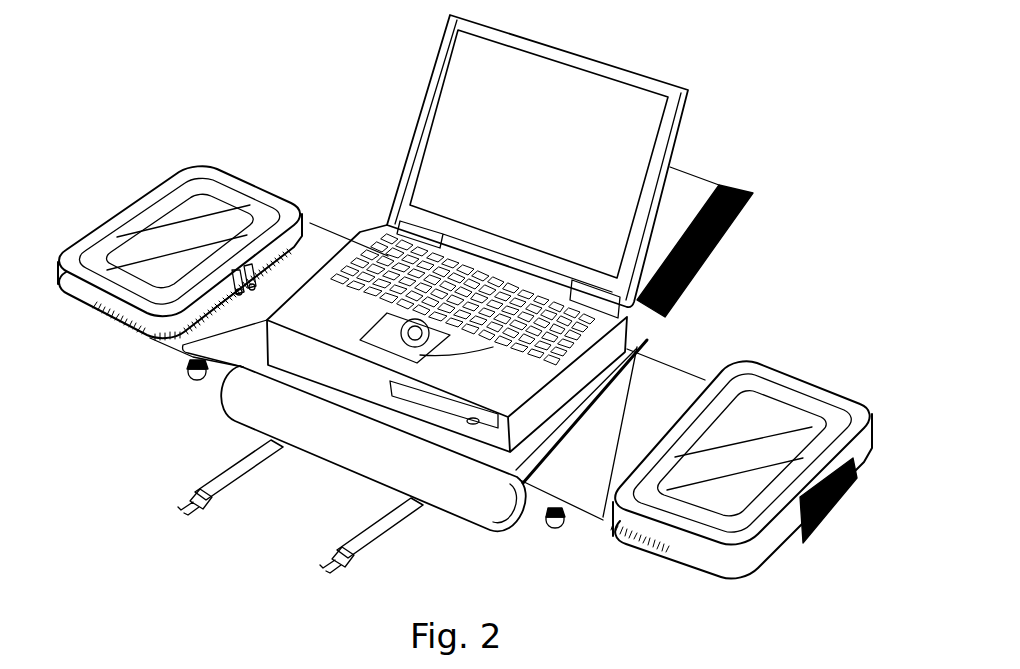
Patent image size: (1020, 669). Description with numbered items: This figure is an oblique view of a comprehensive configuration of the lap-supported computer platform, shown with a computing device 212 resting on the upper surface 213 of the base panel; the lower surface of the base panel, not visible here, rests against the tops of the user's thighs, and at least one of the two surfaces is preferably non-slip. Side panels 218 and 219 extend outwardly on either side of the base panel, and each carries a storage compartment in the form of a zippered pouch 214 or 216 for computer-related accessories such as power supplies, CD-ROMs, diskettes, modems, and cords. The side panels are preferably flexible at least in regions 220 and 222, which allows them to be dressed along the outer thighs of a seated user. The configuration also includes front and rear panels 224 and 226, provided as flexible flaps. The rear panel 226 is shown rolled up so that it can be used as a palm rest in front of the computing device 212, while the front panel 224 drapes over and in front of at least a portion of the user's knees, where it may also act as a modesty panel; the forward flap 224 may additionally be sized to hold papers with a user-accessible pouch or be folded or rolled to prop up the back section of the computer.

The computing device 212 is at (447, 115).
The upper surface of the base panel 213 is at (587, 407).
The zippered pouch 214 is at (178, 247).
The zippered pouch 216 is at (808, 413).
The side panel 218 is at (357, 223).
The side panel 219 is at (793, 363).
The flexible region 220 is at (223, 342).
The flexible region 222 is at (575, 470).
The front panel 224 is at (683, 200).
The rear panel 226 is at (250, 410).